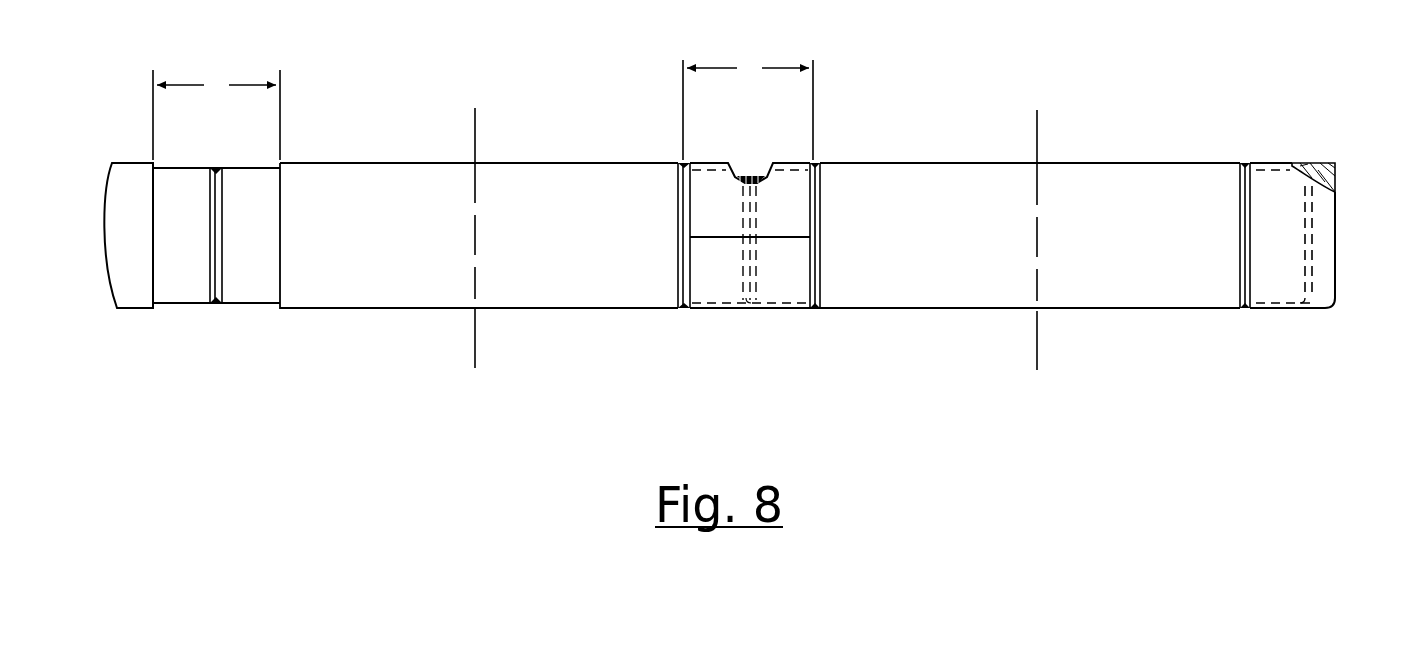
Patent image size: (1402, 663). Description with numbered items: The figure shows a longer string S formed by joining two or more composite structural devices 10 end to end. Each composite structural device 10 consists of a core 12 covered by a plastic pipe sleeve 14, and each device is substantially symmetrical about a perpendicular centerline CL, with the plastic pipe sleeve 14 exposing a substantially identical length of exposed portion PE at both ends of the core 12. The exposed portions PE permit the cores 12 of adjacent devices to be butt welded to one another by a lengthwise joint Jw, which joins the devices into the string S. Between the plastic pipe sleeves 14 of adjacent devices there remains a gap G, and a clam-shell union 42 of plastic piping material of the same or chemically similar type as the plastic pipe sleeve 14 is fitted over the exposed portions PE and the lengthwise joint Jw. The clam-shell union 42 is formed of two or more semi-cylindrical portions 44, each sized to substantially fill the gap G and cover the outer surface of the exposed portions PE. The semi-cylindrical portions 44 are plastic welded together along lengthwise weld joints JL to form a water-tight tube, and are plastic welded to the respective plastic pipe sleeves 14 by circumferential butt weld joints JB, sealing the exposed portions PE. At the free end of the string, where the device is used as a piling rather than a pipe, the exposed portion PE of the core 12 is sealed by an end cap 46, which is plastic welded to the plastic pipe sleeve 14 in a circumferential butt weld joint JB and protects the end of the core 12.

The composite structural device 10 is at (112, 162).
The core 12 is at (198, 249).
The plastic pipe sleeve 14 is at (144, 249).
The clam-shell union 42 is at (707, 327).
The semi-cylindrical portions 44 is at (793, 164).
The end cap 46 is at (1337, 255).
The string S is at (931, 44).
The gap G is at (483, 108).
The lengthwise joint Jw is at (216, 164).
The lengthwise weld joint JL is at (722, 231).
The circumferential butt weld joint JB is at (1241, 160).
The exposed portion PE is at (174, 306).
The perpendicular centerline CL is at (758, 223).